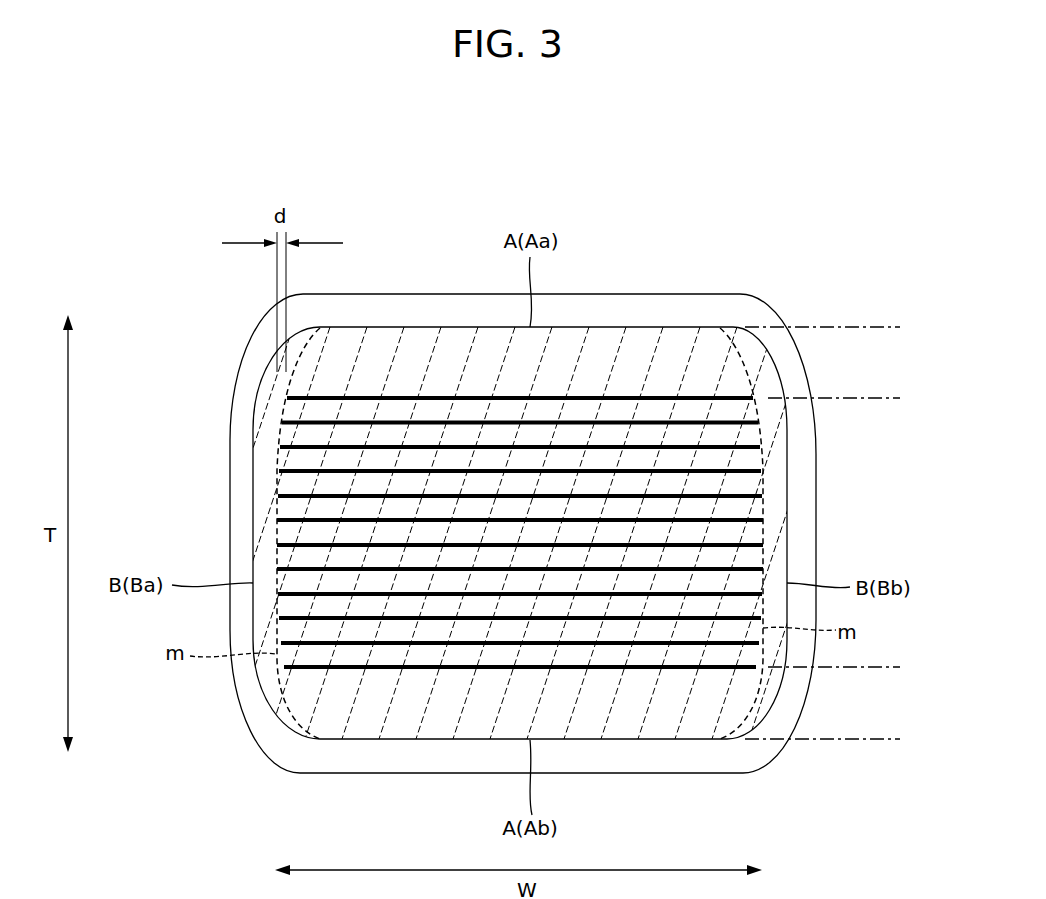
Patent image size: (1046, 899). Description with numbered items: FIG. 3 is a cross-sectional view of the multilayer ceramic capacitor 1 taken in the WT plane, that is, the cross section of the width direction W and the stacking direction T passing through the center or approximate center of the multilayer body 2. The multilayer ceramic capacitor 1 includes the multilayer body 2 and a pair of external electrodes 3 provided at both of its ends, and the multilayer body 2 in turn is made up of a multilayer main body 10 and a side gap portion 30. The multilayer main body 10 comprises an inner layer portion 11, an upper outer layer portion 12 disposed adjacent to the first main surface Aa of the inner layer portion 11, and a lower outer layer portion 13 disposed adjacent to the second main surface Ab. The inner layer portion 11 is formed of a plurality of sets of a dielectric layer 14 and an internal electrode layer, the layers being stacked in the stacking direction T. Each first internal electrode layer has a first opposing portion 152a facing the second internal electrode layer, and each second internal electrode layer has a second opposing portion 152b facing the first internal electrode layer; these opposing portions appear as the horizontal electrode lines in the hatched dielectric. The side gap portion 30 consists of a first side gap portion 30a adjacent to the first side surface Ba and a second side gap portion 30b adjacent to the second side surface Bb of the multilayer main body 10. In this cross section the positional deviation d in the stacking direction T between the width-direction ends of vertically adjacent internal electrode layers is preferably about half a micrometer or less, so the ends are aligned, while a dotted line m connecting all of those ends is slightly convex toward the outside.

The multilayer ceramic capacitor 1 is at (735, 163).
The multilayer body 2 is at (665, 210).
The external electrode 3 is at (608, 310).
The multilayer main body 10 is at (663, 312).
The side gap portion 30 is at (439, 473).
The first side gap portion 30a is at (263, 610).
The second side gap portion 30b is at (733, 312).
The inner layer portion 11 is at (907, 398).
The upper outer layer portion 12 is at (907, 327).
The lower outer layer portion 13 is at (907, 667).
The dielectric layer 14 is at (323, 508).
The first opposing portion 152a is at (337, 447).
The second opposing portion 152b is at (337, 475).